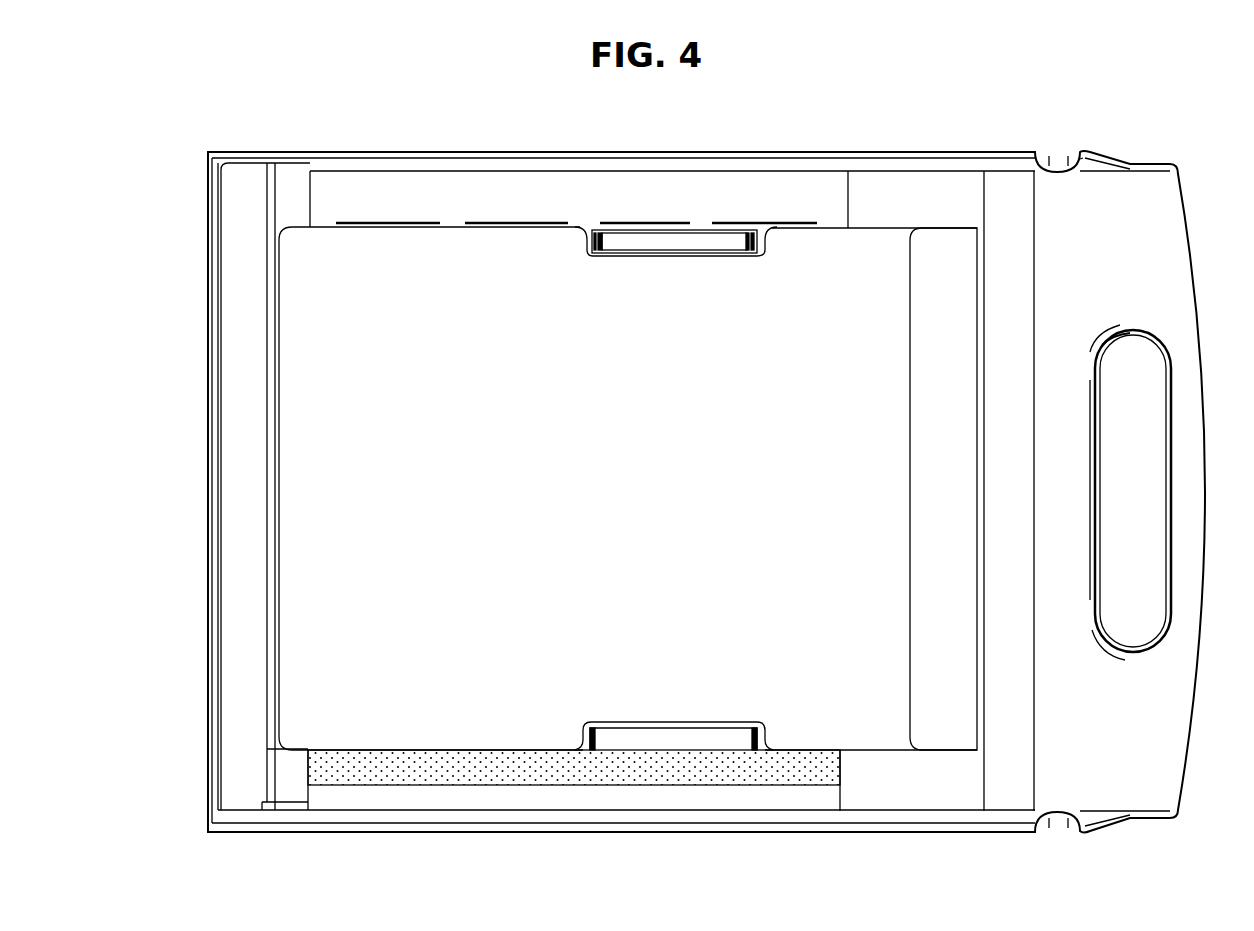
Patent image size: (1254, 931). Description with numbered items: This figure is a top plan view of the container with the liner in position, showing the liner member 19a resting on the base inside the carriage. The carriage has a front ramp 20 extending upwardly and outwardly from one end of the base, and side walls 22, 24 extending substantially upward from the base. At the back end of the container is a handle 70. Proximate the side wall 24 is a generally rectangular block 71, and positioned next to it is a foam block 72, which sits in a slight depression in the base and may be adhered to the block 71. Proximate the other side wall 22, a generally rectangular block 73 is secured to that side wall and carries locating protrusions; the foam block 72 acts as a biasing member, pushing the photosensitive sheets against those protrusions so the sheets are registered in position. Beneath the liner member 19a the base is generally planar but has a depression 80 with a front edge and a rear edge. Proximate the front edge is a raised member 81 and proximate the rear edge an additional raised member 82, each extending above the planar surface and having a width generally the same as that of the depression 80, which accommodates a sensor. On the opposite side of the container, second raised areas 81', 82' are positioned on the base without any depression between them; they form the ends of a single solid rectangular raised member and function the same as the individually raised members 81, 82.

The liner member 19a is at (695, 487).
The front ramp 20 is at (235, 307).
The side wall 22 is at (720, 153).
The side wall 24 is at (612, 832).
The handle 70 is at (1177, 292).
The block 71 is at (404, 800).
The foam block 72 is at (441, 765).
The block 73 is at (502, 190).
The depression 80 is at (656, 245).
The raised member 81 is at (589, 265).
The raised member 82 is at (765, 265).
The second raised area 81' is at (624, 717).
The second raised area 82' is at (734, 717).